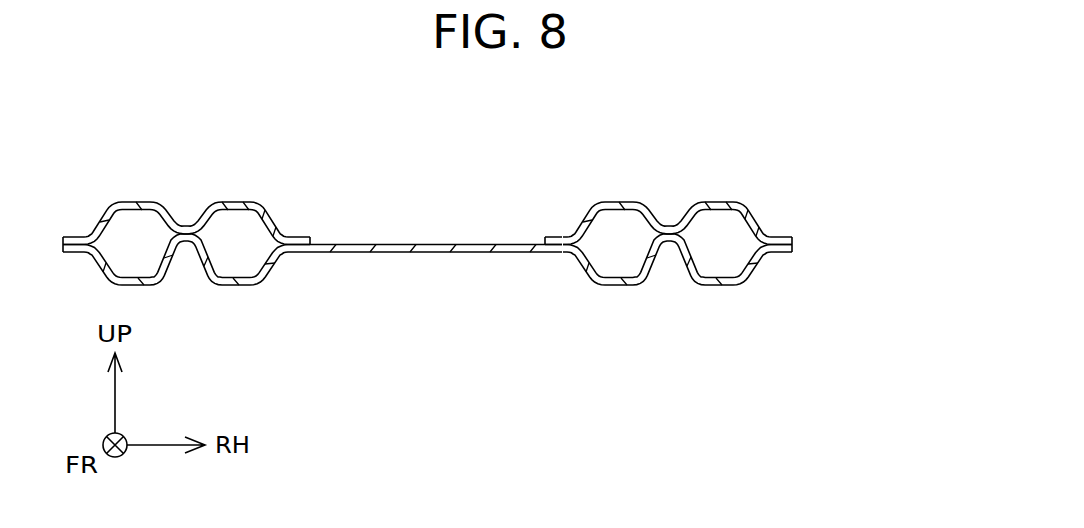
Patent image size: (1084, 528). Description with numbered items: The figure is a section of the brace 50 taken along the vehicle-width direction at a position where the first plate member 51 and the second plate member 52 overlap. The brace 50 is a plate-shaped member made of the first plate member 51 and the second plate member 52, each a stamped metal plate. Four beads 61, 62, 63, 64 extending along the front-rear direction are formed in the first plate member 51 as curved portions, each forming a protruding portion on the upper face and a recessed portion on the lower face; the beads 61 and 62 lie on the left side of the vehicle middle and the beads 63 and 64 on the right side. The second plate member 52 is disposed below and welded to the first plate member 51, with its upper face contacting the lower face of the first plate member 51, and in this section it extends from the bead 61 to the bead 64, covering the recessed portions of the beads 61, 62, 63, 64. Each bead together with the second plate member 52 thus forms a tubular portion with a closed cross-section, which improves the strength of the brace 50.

The brace 50 is at (499, 206).
The first plate member 51 is at (770, 240).
The second plate member 52 is at (770, 250).
The bead 61 is at (143, 207).
The bead 62 is at (235, 207).
The bead 63 is at (628, 207).
The bead 64 is at (728, 207).